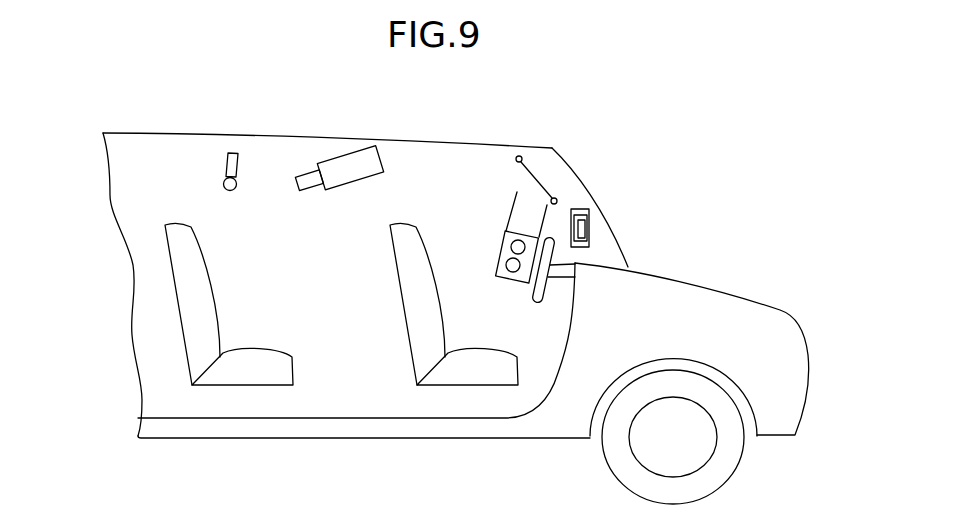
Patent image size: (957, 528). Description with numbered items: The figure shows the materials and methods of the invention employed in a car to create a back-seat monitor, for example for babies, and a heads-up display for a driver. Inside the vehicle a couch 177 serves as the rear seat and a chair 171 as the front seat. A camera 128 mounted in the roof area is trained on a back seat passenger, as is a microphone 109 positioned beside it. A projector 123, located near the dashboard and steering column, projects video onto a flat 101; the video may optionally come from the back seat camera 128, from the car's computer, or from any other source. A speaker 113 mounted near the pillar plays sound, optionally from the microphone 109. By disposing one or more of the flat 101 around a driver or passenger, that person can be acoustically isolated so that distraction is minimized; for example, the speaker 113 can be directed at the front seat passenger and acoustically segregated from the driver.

The flat 101 is at (537, 178).
The microphone 109 is at (225, 152).
The speaker 113 is at (588, 217).
The projector 123 is at (508, 277).
The camera 128 is at (342, 155).
The chair 171 is at (452, 373).
The couch 177 is at (238, 373).